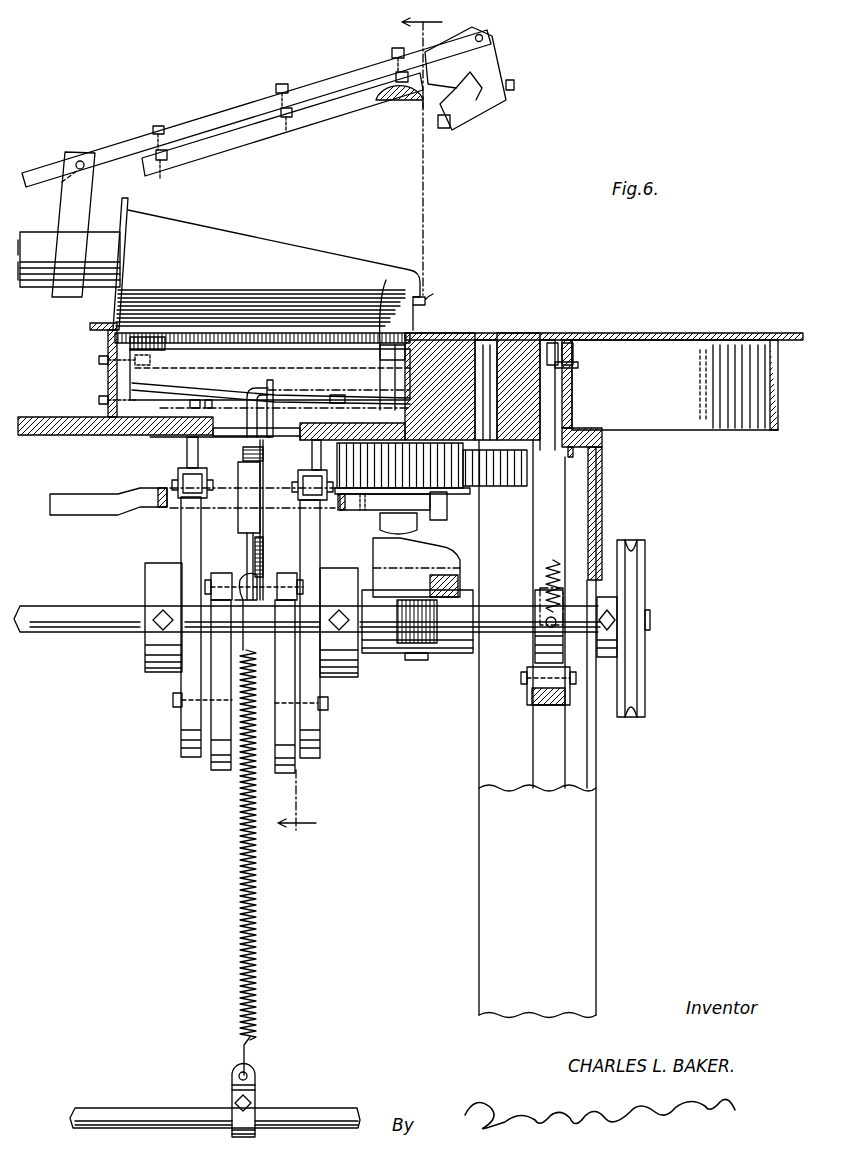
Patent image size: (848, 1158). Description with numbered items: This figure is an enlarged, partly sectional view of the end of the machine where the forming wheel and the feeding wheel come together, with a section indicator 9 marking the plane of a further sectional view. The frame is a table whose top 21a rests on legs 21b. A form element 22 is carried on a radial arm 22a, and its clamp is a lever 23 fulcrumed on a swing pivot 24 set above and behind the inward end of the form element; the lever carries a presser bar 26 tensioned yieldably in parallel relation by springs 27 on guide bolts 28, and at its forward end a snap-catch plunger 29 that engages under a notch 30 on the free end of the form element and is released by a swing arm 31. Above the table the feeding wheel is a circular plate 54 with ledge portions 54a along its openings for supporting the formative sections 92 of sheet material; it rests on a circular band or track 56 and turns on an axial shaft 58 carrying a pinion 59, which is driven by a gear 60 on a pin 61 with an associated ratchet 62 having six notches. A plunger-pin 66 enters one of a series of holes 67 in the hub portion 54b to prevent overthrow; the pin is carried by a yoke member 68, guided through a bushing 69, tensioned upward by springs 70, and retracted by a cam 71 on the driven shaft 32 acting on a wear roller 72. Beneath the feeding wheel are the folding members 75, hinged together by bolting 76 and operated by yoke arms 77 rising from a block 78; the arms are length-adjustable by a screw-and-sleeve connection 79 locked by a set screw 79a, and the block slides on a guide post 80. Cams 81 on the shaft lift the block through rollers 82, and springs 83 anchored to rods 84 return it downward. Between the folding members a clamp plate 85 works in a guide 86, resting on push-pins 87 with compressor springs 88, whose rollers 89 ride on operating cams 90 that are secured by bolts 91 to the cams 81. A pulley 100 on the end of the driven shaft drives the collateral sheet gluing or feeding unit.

The section line 9 is at (360, 428).
The top 21a is at (55, 413).
The legs 21b is at (588, 878).
The form element 22 is at (318, 258).
The radial arms or bars 22a is at (24, 280).
The lever 23 is at (207, 128).
The swing pivot 24 is at (84, 158).
The presser bar 26 is at (262, 118).
The springs 27 is at (290, 108).
The guide bolts 28 is at (155, 126).
The plunger 29 is at (446, 129).
The notch or shoulder 30 is at (433, 304).
The swing arm 31 is at (495, 75).
The driven shaft 32 is at (84, 624).
The circular plate 54 is at (604, 328).
The ledge or shelf portions 54a is at (385, 302).
The hub portion 54b is at (578, 362).
The circular band or track 56 is at (735, 420).
The axial shaft 58 is at (498, 352).
The pinion 59 is at (490, 480).
The driving pinion or gear 60 is at (440, 500).
The pin or shaft 61 is at (417, 586).
The ratchet 62 is at (448, 510).
The plunger-pin 66 is at (578, 343).
The holes 67 is at (555, 345).
The yoke member 68 is at (600, 518).
The bushing or spacer block 69 is at (556, 408).
The springs 70 is at (545, 580).
The cam 71 is at (535, 655).
The wear roller 72 is at (545, 680).
The folding members 75 is at (270, 378).
The bolting 76 is at (100, 356).
The yoke arms 77 is at (247, 440).
The block 78 is at (240, 584).
The screw-and-sleeve piecing connection 79 is at (238, 520).
The set screw 79a is at (248, 460).
The guide post 80 is at (263, 548).
The cams 81 is at (210, 770).
The rollers 82 is at (211, 582).
The springs 83 is at (258, 982).
The rod or rods 84 is at (132, 1118).
The clamp plate 85 is at (240, 342).
The guide 86 is at (380, 396).
The push-pins 87 is at (187, 456).
The compressor springs 88 is at (160, 438).
The rollers 89 is at (188, 498).
The operating cams 90 is at (190, 538).
The bolts 91 is at (173, 703).
The formative sections 92 is at (142, 340).
The pulley 100 is at (640, 575).